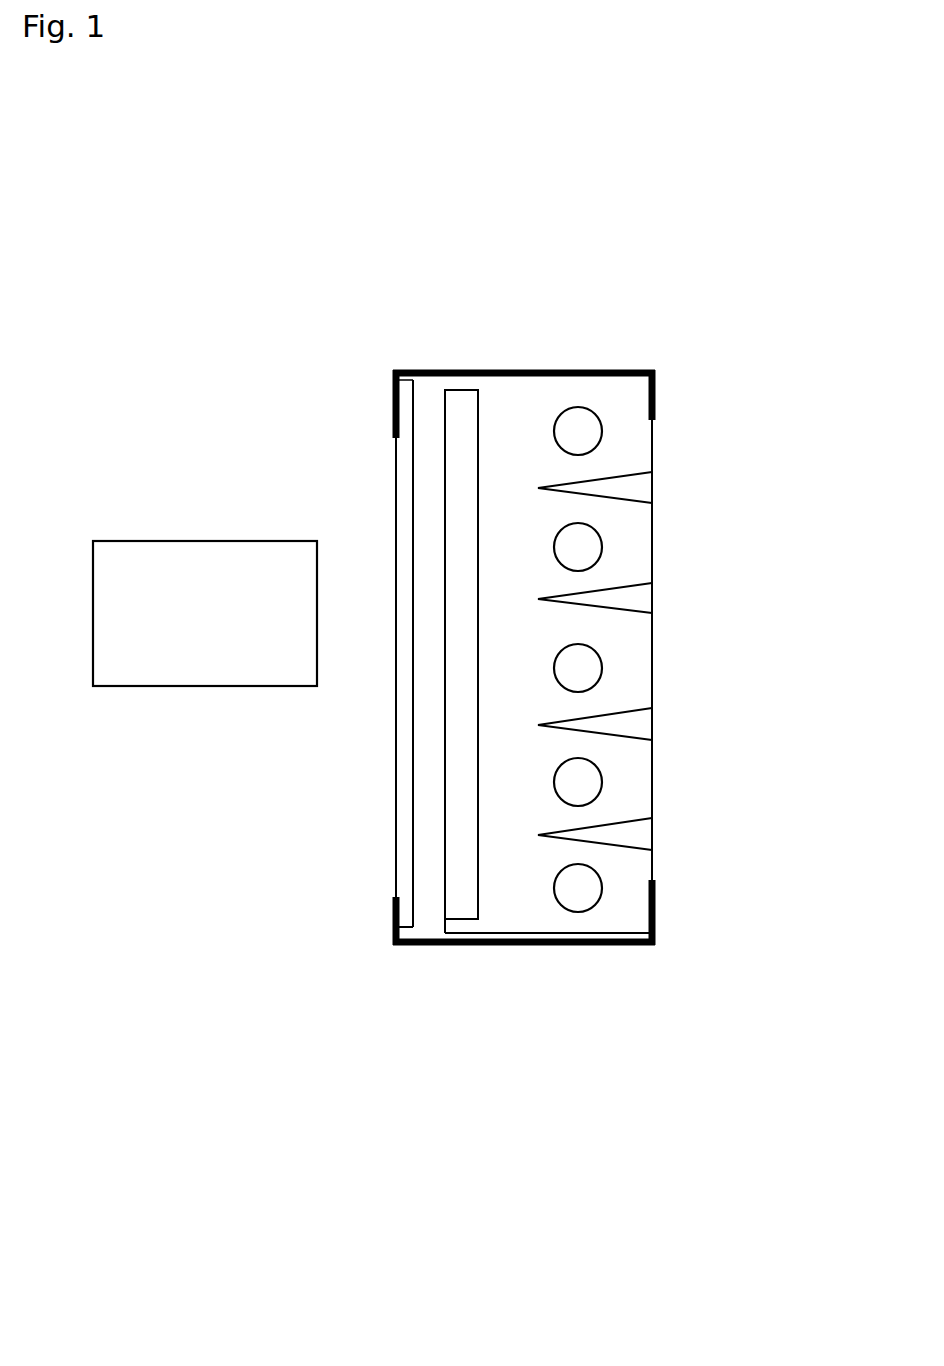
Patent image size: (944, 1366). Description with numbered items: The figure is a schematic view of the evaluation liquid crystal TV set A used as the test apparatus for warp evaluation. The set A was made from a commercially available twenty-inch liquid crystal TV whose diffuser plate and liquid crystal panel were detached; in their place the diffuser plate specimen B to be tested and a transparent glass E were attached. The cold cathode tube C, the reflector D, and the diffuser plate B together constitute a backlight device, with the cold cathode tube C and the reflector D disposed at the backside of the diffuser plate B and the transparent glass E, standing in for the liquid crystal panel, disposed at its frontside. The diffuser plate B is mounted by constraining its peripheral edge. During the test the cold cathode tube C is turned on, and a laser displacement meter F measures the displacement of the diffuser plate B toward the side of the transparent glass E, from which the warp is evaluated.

The evaluation liquid crystal TV set A is at (365, 1007).
The formed specimen (light diffuser plate) B is at (463, 919).
The cold-cathode tube C is at (588, 912).
The reflector D is at (636, 450).
The transparent glass E is at (402, 384).
The laser displacement meter F is at (317, 570).